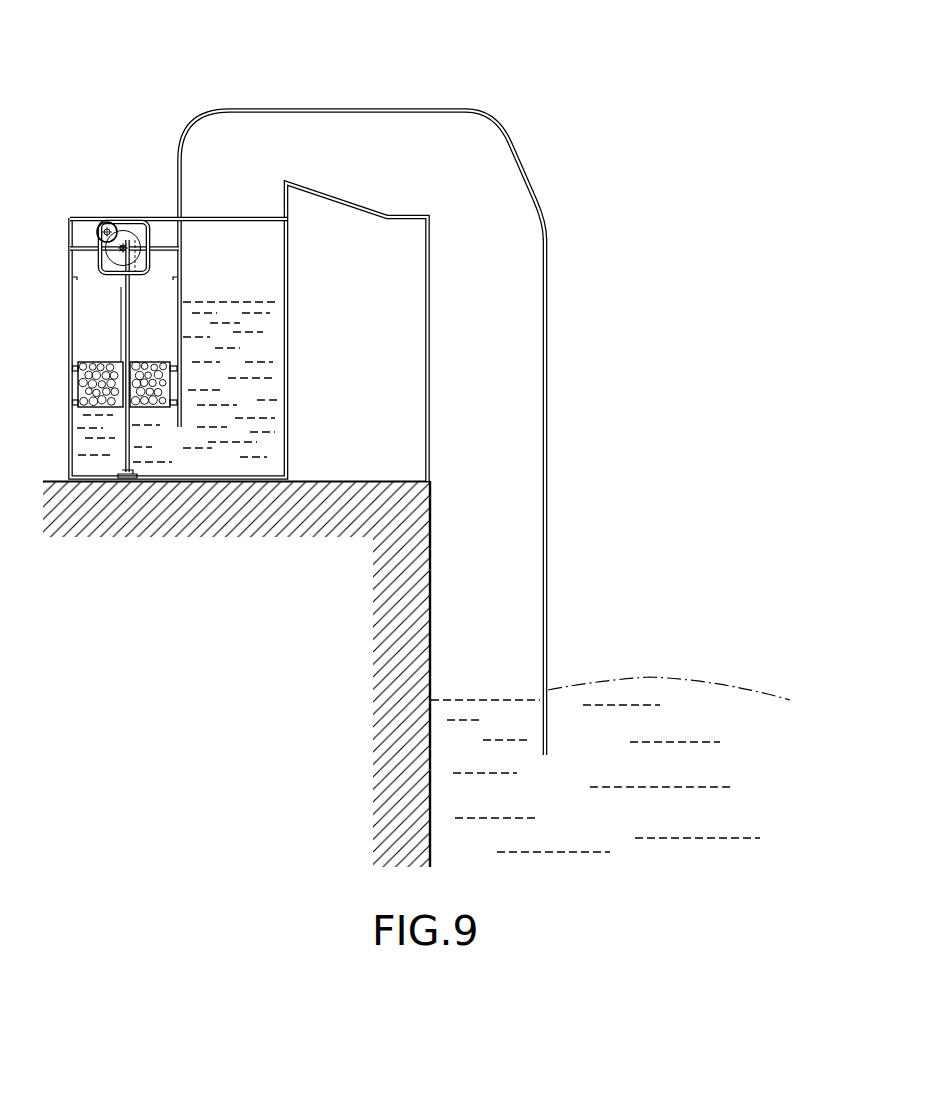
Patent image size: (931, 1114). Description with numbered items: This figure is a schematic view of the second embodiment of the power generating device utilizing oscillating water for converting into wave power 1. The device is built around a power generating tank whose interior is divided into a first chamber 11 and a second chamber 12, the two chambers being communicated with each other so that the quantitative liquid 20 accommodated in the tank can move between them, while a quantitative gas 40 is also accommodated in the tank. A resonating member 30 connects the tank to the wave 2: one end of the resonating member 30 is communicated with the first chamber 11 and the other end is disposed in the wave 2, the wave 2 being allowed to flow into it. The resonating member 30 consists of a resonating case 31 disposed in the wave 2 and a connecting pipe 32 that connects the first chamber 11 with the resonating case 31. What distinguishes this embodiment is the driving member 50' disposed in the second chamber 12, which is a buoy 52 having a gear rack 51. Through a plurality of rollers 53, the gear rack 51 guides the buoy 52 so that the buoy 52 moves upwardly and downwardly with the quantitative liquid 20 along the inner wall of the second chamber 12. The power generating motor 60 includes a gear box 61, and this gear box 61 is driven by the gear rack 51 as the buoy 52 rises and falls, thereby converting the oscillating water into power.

The power generating device utilizing oscillating water for converting into wave pow 1 is at (421, 46).
The wave 2 is at (648, 686).
The first chamber 11 is at (268, 443).
The second chamber 12 is at (95, 464).
The quantitative liquid 20 is at (242, 397).
The resonating member 30 is at (547, 50).
The resonating case 31 is at (528, 178).
The connecting pipe 32 is at (400, 108).
The quantitative gas 40 is at (500, 352).
The driving member 50' is at (192, 359).
The gear rack 51 is at (131, 325).
The buoy 52 is at (172, 373).
The rollers 53 is at (72, 402).
The power generating motor 60 is at (97, 228).
The gear box 61 is at (147, 223).